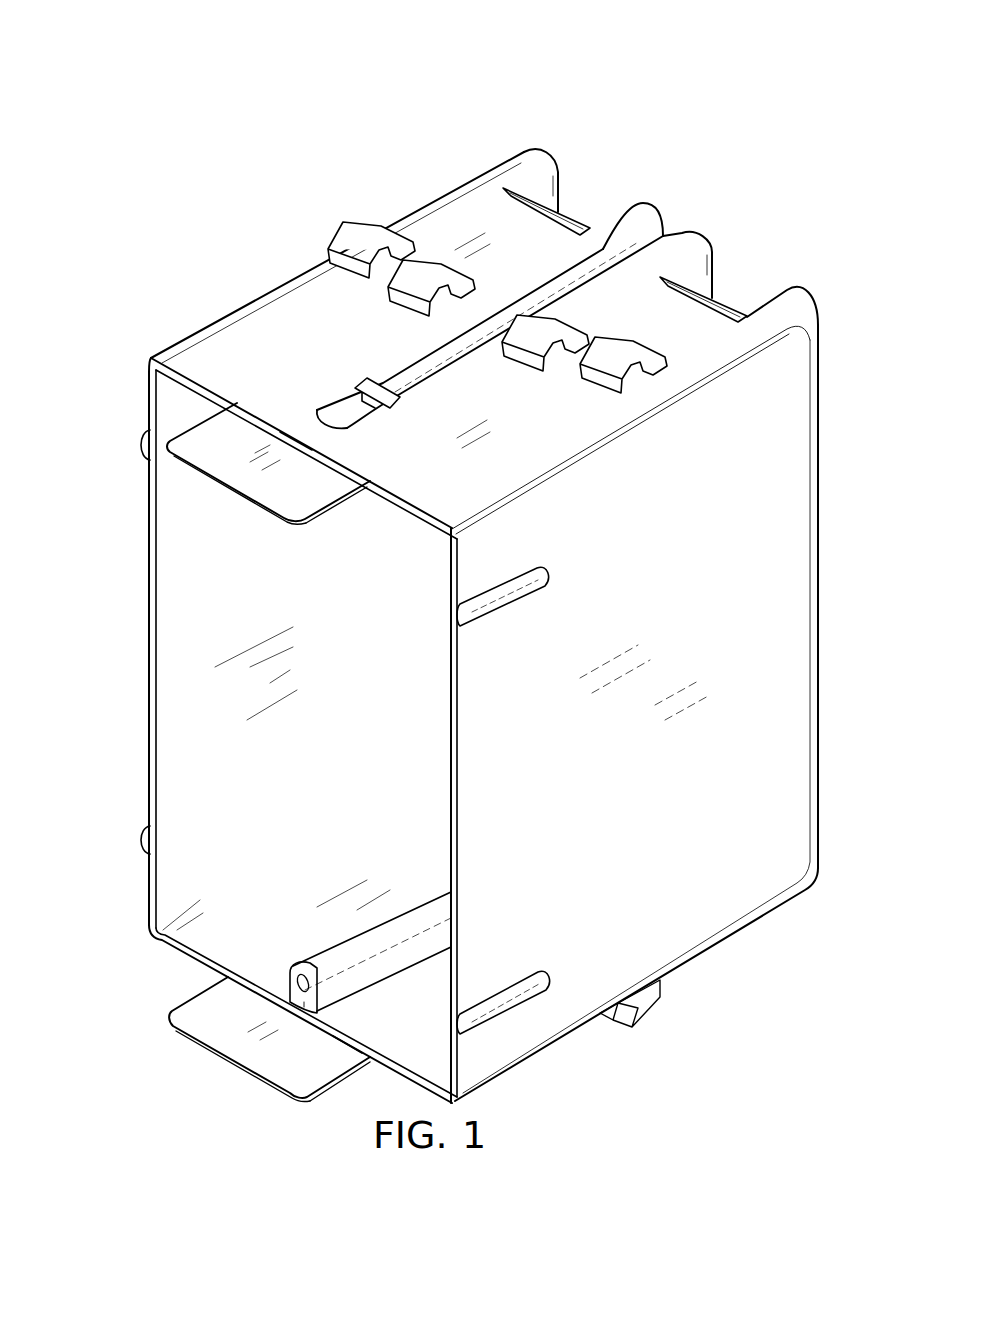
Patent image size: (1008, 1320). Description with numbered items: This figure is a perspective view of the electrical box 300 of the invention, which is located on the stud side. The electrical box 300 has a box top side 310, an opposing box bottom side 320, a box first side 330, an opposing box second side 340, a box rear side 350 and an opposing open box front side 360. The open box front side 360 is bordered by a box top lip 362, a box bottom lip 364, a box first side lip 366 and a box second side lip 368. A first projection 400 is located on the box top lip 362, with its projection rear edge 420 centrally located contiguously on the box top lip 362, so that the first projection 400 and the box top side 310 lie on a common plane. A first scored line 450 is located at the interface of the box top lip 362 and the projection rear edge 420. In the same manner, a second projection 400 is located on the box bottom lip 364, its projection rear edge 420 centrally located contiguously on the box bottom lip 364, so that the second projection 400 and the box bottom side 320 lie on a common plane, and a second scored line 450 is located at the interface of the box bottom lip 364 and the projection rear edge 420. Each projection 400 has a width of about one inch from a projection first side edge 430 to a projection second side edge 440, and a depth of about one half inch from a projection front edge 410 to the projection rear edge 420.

The electrical box 300 is at (397, 166).
The box top side 310 is at (468, 207).
The box bottom side 320 is at (680, 970).
The box first side 330 is at (149, 652).
The box second side 340 is at (730, 882).
The box rear side 350 is at (819, 348).
The open box front side 360 is at (150, 840).
The box top lip 362 is at (207, 384).
The box bottom lip 364 is at (190, 957).
The box first side lip 366 is at (151, 583).
The box second side lip 368 is at (454, 932).
The projection 400 is at (216, 432).
The projection front edge 410 is at (227, 488).
The projection rear edge 420 is at (272, 419).
The projection first side edge 430 is at (150, 433).
The projection second side edge 440 is at (347, 1073).
The scored line 450 is at (293, 430).